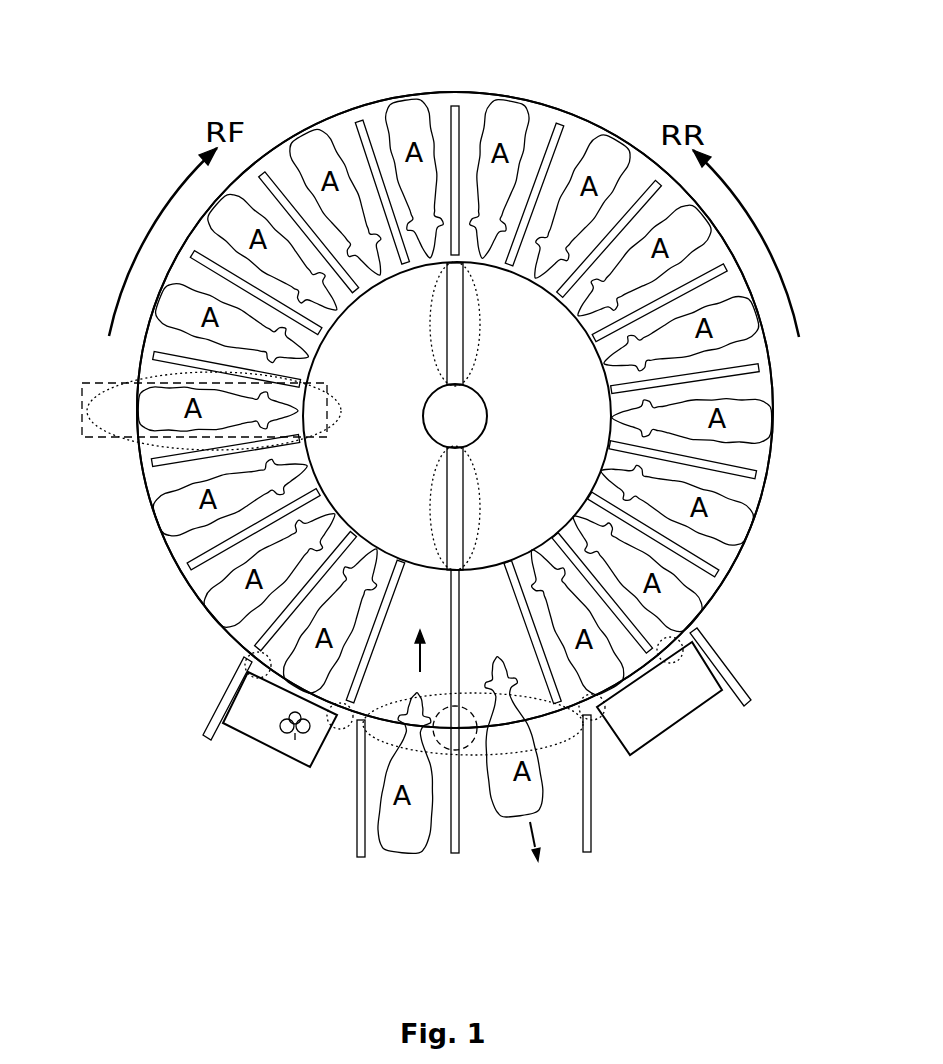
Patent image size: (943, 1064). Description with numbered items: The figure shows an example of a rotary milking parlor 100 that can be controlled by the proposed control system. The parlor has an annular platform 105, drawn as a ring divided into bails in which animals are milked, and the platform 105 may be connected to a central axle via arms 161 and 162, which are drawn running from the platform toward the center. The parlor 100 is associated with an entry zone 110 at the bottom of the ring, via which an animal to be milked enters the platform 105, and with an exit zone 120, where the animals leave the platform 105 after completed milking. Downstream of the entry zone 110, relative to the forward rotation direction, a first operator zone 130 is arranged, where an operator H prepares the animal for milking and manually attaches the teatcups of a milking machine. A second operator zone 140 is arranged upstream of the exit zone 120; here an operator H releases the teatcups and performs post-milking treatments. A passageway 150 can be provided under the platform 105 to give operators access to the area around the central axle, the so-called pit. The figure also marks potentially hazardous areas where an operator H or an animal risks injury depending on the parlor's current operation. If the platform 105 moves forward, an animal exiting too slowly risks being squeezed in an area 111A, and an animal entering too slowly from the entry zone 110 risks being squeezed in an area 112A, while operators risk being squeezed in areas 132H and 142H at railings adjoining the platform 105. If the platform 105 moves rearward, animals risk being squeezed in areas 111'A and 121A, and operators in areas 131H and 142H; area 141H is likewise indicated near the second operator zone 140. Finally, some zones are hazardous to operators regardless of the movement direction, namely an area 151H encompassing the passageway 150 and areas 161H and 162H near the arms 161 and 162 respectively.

The rotary milking parlor 100 is at (320, 67).
The platform 105 is at (468, 104).
The entry zone 110 is at (410, 870).
The hazardous area 111A is at (467, 752).
The hazardous area 111'A is at (480, 854).
The hazardous area 112A is at (358, 733).
The exit zone 120 is at (560, 853).
The hazardous area 121A is at (590, 777).
The first operator zone 130 is at (258, 712).
The hazardous area 131H is at (340, 733).
The hazardous area 132H is at (245, 656).
The second operator zone 140 is at (683, 720).
The hazardous area 141H is at (744, 694).
The hazardous area 142H is at (678, 766).
The passageway 150 is at (118, 413).
The hazardous area 151H is at (337, 397).
The arm 161 is at (457, 510).
The hazardous area 161H is at (432, 484).
The arm 162 is at (457, 317).
The hazardous area 162H is at (431, 326).
The operator H is at (290, 730).